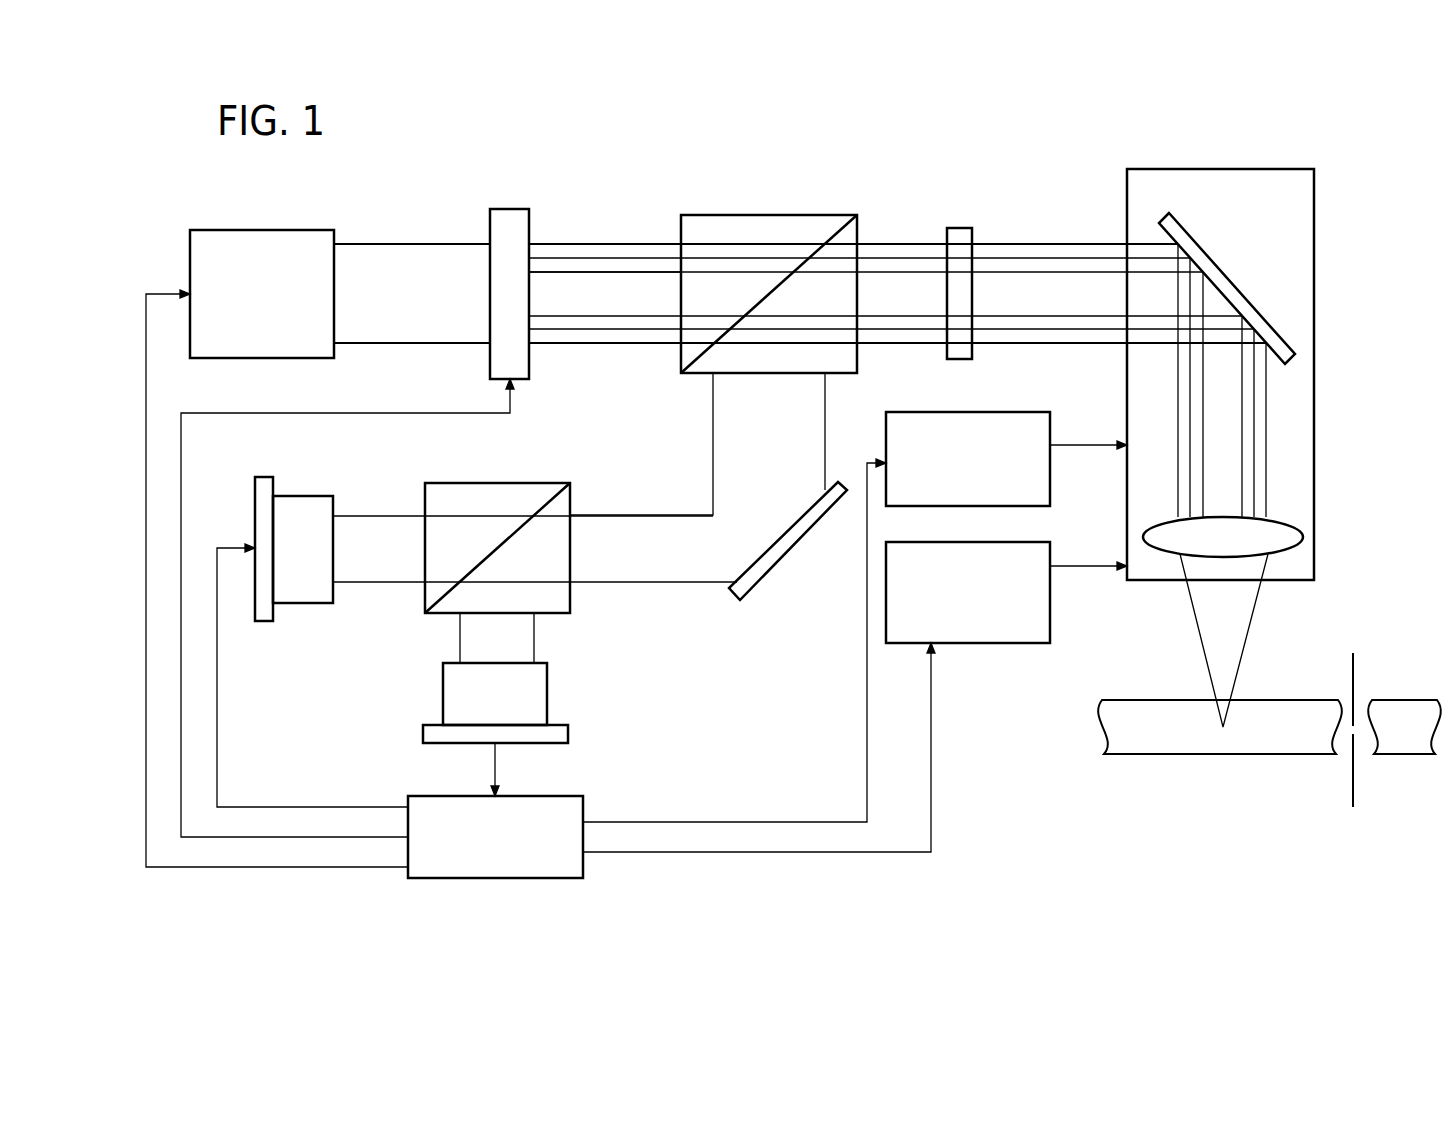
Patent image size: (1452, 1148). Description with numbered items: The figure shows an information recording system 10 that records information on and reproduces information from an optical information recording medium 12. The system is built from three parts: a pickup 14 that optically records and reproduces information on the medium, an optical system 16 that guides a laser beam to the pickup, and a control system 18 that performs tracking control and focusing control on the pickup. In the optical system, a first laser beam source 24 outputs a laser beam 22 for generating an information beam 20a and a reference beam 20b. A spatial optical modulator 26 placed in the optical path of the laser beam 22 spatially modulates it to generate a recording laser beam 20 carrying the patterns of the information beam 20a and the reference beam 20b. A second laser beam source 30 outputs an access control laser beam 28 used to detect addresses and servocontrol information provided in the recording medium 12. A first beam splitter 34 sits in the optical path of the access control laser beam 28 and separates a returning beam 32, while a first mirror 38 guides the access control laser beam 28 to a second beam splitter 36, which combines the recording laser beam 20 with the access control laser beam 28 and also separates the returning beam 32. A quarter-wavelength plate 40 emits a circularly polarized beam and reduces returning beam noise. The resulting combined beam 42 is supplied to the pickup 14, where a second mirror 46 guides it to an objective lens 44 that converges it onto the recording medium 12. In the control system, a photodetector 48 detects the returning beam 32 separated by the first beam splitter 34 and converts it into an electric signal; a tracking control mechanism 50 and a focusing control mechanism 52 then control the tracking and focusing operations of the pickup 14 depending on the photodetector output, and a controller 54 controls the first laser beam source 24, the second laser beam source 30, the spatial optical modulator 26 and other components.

The information recording system 10 is at (397, 147).
The optical information recording medium 12 is at (1213, 758).
The pickup 14 is at (1314, 237).
The optical system 16 is at (887, 185).
The control system 18 is at (985, 652).
The recording laser beam 20 is at (598, 345).
The information beam 20a is at (632, 272).
The reference beam 20b is at (570, 244).
The laser beam 22 is at (411, 244).
The first laser beam source 24 is at (287, 230).
The spatial optical modulator 26 is at (502, 209).
The access control laser beam 28 is at (370, 583).
The second laser beam source 30 is at (318, 496).
The returning beam 32 is at (535, 645).
The first beam splitter 34 is at (557, 483).
The second beam splitter 36 is at (745, 215).
The first mirror 38 is at (766, 575).
The quarter-wavelength plate 40 is at (970, 228).
The combined beam 42 is at (1028, 242).
The objective lens 44 is at (1290, 535).
The second mirror 46 is at (1205, 250).
The photodetector 48 is at (547, 710).
The tracking control mechanism 50 is at (1050, 412).
The focusing control mechanism 52 is at (1050, 542).
The controller 54 is at (573, 793).